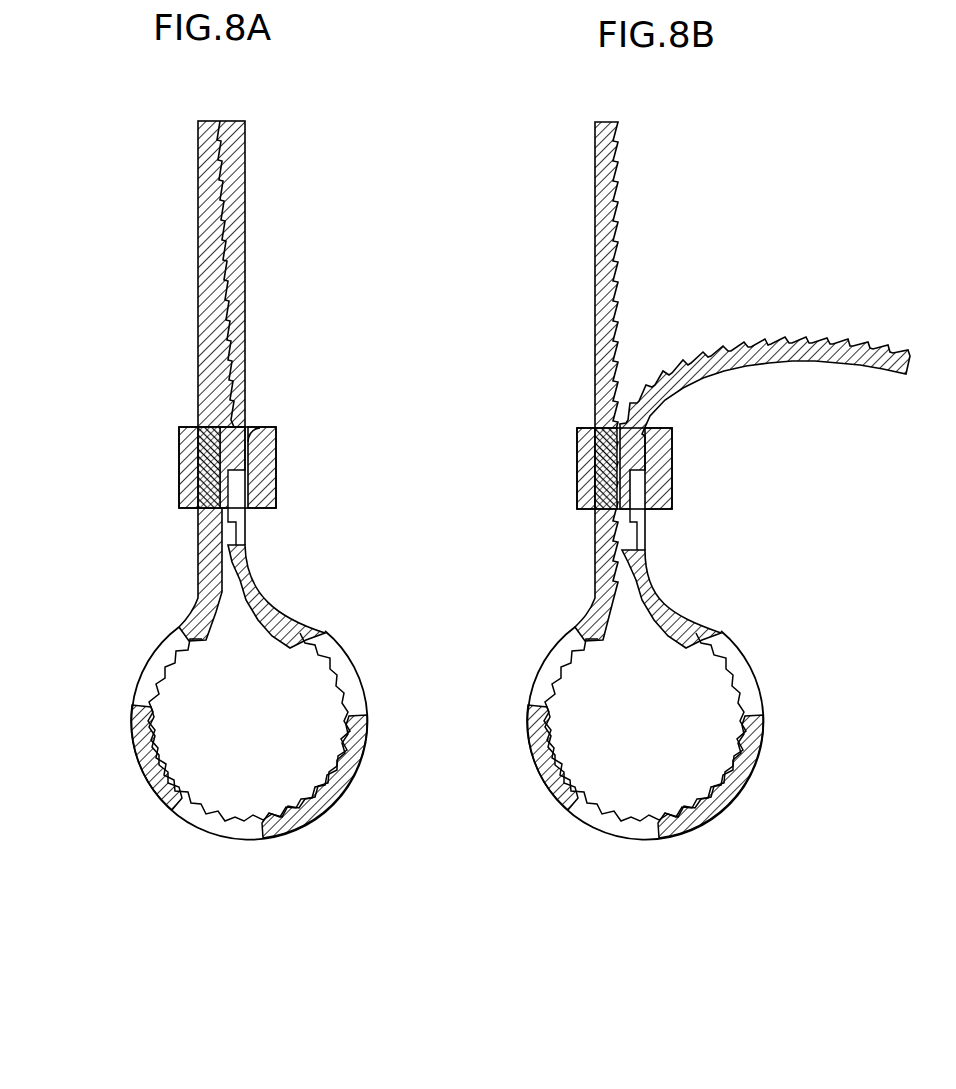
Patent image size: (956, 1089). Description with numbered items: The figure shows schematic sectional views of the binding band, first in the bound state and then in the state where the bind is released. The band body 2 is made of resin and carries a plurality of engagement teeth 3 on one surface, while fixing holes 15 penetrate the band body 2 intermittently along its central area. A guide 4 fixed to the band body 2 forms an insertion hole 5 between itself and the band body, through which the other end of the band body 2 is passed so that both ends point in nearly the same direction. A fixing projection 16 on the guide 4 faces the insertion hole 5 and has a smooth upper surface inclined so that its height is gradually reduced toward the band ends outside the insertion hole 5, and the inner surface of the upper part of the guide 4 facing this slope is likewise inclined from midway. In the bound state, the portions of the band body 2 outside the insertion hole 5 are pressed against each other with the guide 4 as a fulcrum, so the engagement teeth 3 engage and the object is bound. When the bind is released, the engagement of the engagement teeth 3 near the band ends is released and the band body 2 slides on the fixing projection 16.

In FIG. 8A, the band body 2 is at (198, 185).
In FIG. 8B, the band body 2 is at (595, 203).
In FIG. 8A, the engagement teeth 3 is at (292, 636).
In FIG. 8B, the engagement teeth 3 is at (645, 733).
In FIG. 8A, the guide 4 is at (277, 463).
In FIG. 8B, the guide 4 is at (673, 463).
In FIG. 8A, the insertion hole 5 is at (258, 422).
In FIG. 8A, the fixing holes 15 is at (258, 533).
In FIG. 8B, the fixing holes 15 is at (656, 533).
In FIG. 8A, the fixing projection 16 is at (198, 452).
In FIG. 8B, the fixing projection 16 is at (595, 452).